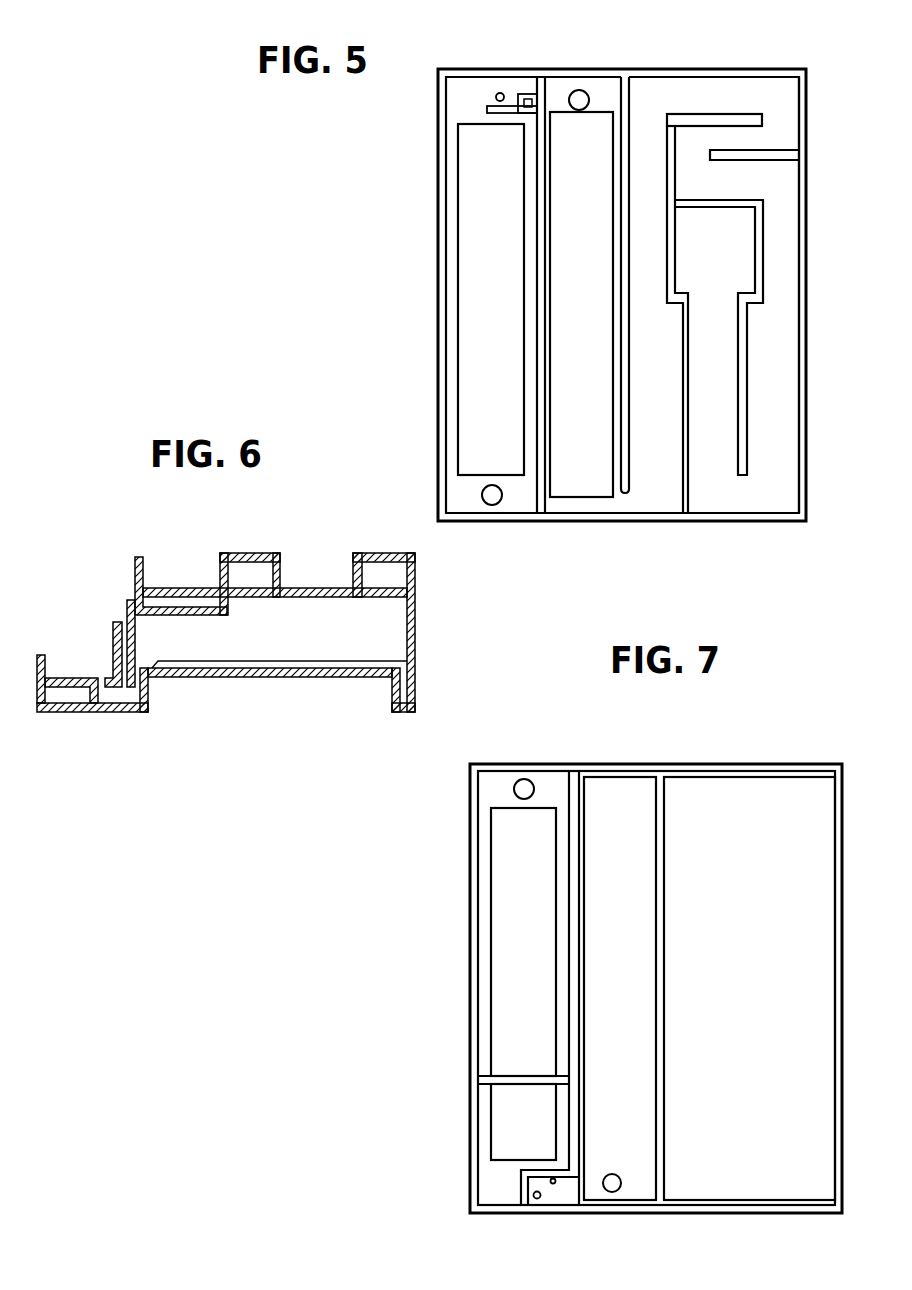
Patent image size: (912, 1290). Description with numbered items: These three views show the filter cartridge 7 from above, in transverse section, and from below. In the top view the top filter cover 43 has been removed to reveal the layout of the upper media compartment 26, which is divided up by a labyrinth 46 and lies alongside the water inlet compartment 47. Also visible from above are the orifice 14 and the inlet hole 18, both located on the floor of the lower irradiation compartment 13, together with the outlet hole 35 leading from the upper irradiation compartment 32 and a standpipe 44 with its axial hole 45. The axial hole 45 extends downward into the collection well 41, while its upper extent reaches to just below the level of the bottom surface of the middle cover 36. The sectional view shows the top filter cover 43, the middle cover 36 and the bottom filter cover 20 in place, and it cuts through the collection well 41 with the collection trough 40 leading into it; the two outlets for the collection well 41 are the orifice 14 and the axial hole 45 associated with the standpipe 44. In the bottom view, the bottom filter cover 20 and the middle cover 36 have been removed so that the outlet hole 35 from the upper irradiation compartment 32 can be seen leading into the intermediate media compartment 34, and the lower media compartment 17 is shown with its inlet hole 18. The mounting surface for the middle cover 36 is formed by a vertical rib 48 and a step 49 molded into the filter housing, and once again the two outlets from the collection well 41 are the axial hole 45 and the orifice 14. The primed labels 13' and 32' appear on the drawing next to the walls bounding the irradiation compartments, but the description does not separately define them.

In FIG. 5, the filter cartridge 7 is at (630, 62).
In FIG. 6, the filter cartridge 7 is at (418, 645).
In FIG. 7, the filter cartridge 7 is at (703, 758).
In FIG. 5, the lower irradiation compartment 13 is at (455, 299).
In FIG. 5, the compartment side wall 13' is at (589, 295).
In FIG. 6, the compartment side wall 13' is at (48, 647).
In FIG. 5, the orifice 14 is at (497, 93).
In FIG. 6, the orifice 14 is at (97, 678).
In FIG. 7, the orifice 14 is at (536, 1199).
In FIG. 7, the lower media compartment 17 is at (498, 898).
In FIG. 5, the inlet hole 18 is at (492, 485).
In FIG. 7, the inlet hole 18 is at (523, 779).
In FIG. 6, the bottom filter cover 20 is at (52, 713).
In FIG. 5, the upper media compartment 26 is at (783, 441).
In FIG. 5, the upper irradiation compartment 32 is at (552, 287).
In FIG. 5, the partition wall 32' is at (567, 327).
In FIG. 6, the partition wall 32' is at (181, 555).
In FIG. 6, the intermediate media compartment 34 is at (177, 593).
In FIG. 7, the intermediate media compartment 34 is at (638, 840).
In FIG. 5, the outlet hole 35 is at (580, 90).
In FIG. 7, the outlet hole 35 is at (616, 1175).
In FIG. 6, the middle cover 36 is at (180, 617).
In FIG. 6, the collection trough 40 is at (136, 694).
In FIG. 6, the collection well 41 is at (108, 695).
In FIG. 7, the collection well 41 is at (548, 1199).
In FIG. 6, the top filter cover 43 is at (377, 553).
In FIG. 5, the standpipe 44 is at (530, 93).
In FIG. 6, the standpipe 44 is at (114, 630).
In FIG. 5, the axial hole 45 is at (527, 114).
In FIG. 6, the axial hole 45 is at (126, 615).
In FIG. 7, the axial hole 45 is at (555, 1184).
In FIG. 5, the labyrinth 46 is at (725, 97).
In FIG. 5, the water inlet compartment 47 is at (722, 237).
In FIG. 7, the vertical rib 48 is at (663, 922).
In FIG. 7, the step 49 is at (605, 771).